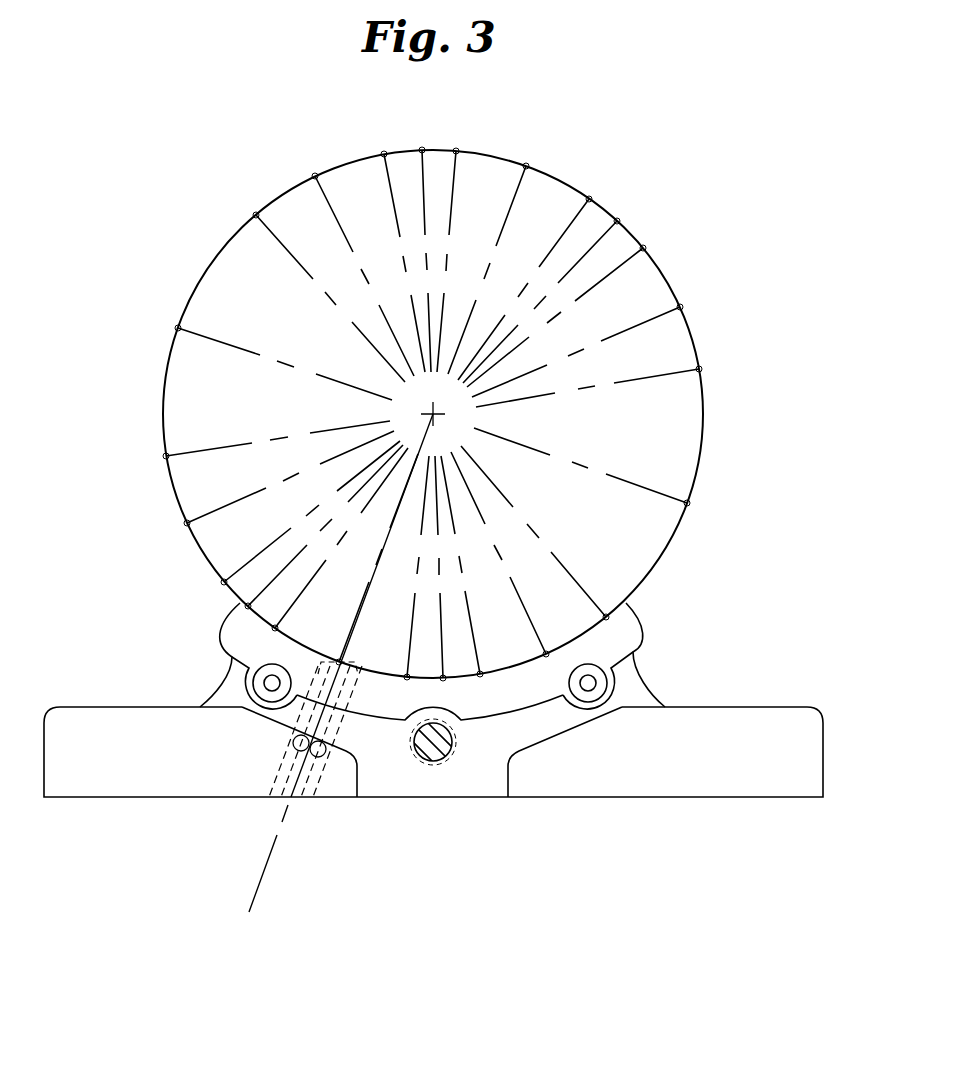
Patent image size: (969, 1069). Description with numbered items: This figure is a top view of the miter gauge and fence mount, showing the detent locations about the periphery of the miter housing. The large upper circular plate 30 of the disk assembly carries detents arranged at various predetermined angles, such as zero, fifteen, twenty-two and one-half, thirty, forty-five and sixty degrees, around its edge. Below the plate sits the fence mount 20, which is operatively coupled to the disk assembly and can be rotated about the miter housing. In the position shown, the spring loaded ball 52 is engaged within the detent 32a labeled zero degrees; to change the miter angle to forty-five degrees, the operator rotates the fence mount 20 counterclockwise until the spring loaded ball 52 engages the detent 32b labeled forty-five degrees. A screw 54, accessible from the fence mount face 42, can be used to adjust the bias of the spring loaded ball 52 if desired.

The upper circular plate 30 is at (705, 412).
The fence mount 20 is at (122, 782).
The detent labeled 0° 32a is at (337, 660).
The detent labeled 45° 32b is at (540, 652).
The spring loaded ball 52 is at (323, 673).
The fence mount face 42 is at (240, 797).
The screw 54 is at (344, 740).